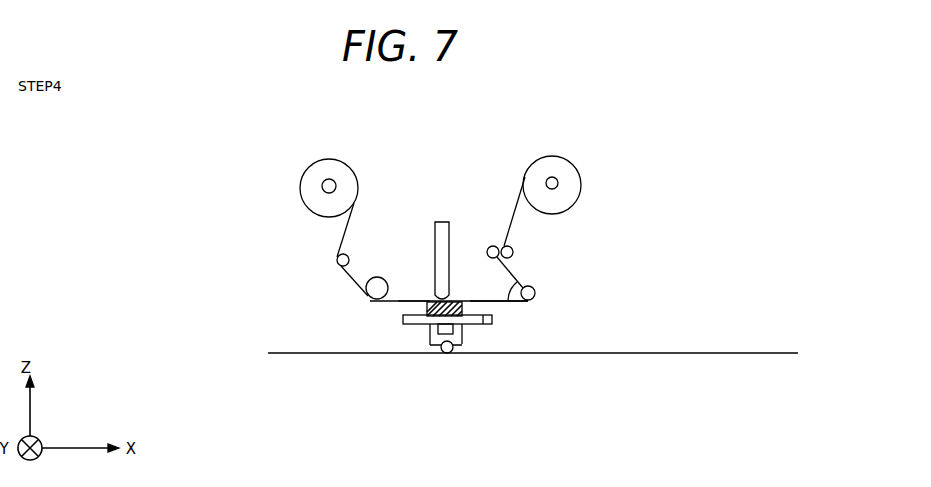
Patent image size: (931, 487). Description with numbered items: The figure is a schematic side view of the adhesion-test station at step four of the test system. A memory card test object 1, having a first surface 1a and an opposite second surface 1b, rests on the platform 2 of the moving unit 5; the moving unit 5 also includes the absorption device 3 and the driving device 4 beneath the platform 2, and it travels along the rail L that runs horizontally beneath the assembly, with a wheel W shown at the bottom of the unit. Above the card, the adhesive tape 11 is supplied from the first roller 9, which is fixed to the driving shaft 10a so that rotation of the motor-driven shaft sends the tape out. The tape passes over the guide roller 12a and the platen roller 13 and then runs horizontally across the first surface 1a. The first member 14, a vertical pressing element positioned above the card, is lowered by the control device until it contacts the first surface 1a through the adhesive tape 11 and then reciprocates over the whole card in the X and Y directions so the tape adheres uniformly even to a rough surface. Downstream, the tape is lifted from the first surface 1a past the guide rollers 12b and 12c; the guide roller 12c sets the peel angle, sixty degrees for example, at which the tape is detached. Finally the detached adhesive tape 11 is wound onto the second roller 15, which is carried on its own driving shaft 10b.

The test object 1 is at (492, 320).
The first surface 1a is at (400, 302).
The second surface 1b is at (464, 328).
The platform 2 is at (421, 321).
The absorption device 3 is at (428, 333).
The driving device 4 is at (431, 346).
The moving unit 5 is at (417, 343).
The first roller 9 is at (312, 162).
The driving shaft 10a is at (330, 186).
The driving shaft 10b is at (553, 184).
The adhesive tape 11 is at (511, 302).
The guide roller 12a is at (349, 255).
The guide roller 12b is at (530, 288).
The guide roller 12c is at (490, 246).
The platen roller 13 is at (381, 285).
The first member 14 is at (443, 222).
The second roller 15 is at (537, 154).
The workpiece W is at (447, 354).
The rail L is at (680, 354).